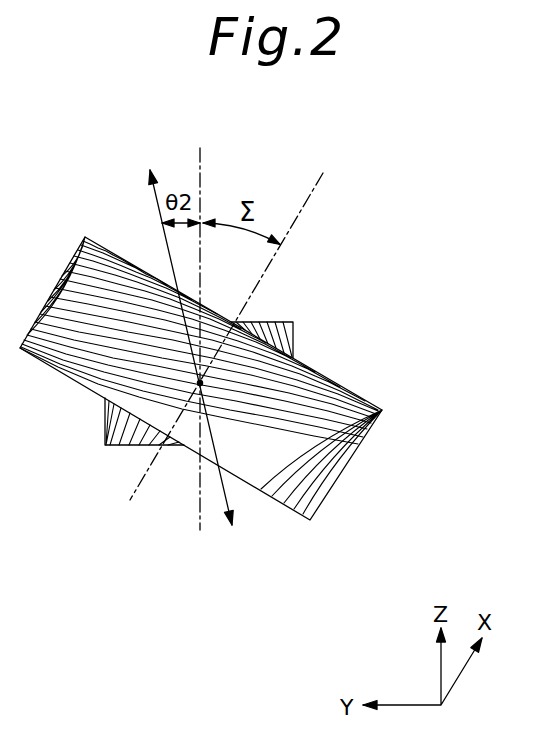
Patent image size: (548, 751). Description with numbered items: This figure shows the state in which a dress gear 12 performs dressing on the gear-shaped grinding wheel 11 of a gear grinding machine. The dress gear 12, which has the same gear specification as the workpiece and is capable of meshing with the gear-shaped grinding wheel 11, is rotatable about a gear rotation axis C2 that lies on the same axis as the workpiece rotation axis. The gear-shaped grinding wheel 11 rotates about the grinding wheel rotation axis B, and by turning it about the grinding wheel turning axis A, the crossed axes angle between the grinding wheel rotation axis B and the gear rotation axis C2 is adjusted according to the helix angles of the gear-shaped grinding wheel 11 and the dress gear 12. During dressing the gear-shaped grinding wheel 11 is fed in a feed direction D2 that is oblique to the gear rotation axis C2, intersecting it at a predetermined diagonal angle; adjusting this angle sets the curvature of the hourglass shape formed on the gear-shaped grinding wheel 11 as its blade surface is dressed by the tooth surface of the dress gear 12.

The gear-shaped grinding wheel 11 is at (347, 462).
The dress gear 12 is at (293, 335).
The grinding wheel turning axis A is at (200, 383).
The grinding wheel rotation axis B is at (233, 324).
The gear rotation axis C2 is at (197, 326).
The feed direction D2 is at (181, 334).